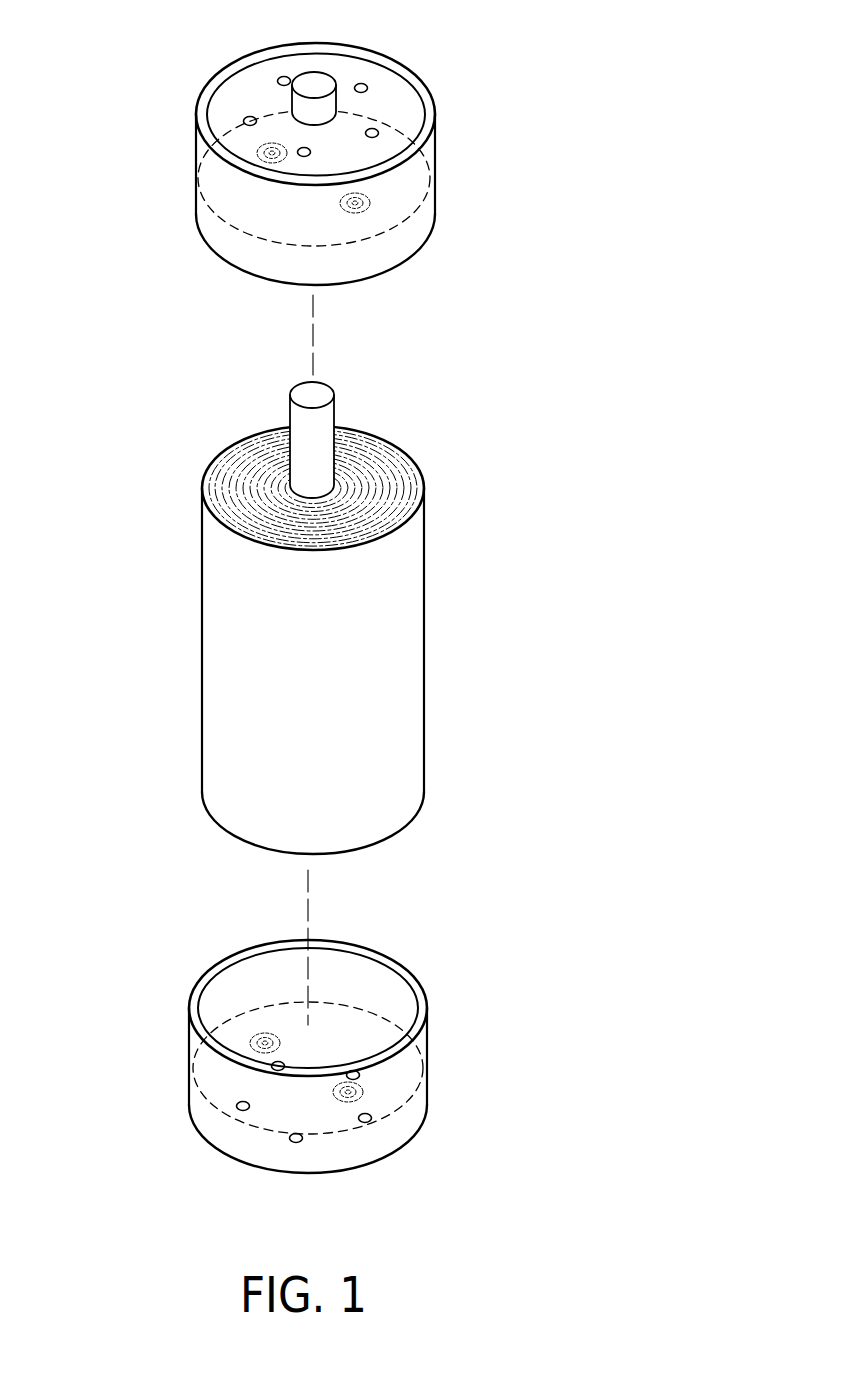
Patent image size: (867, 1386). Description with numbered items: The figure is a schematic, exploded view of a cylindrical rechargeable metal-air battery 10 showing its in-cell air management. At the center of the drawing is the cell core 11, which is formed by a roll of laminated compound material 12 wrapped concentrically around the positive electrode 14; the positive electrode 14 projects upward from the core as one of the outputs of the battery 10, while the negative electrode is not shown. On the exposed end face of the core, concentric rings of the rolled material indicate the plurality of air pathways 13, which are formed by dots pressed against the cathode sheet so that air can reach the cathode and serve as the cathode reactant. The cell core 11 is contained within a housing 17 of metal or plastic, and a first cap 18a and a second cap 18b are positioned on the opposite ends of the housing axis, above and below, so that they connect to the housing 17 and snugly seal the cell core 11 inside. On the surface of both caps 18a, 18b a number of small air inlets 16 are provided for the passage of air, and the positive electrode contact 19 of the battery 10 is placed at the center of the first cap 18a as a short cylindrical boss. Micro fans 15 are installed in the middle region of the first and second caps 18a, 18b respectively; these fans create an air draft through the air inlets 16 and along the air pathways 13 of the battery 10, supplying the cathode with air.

The cylindrical metal-air battery 10 is at (607, 283).
The cell core 11 is at (290, 483).
The laminated compound material 12 is at (423, 503).
The air pathways 13 is at (410, 473).
The positive electrode 14 is at (290, 393).
The micro fans 15 is at (355, 205).
The air inlets 16 is at (366, 87).
The housing 17 is at (202, 660).
The first cap 18a is at (435, 155).
The second cap 18b is at (189, 1040).
The positive electrode contact 19 is at (312, 84).